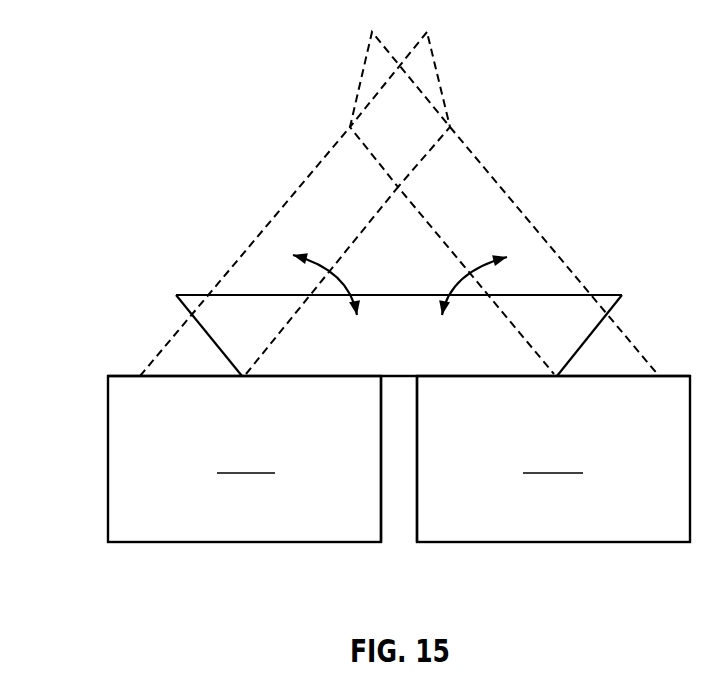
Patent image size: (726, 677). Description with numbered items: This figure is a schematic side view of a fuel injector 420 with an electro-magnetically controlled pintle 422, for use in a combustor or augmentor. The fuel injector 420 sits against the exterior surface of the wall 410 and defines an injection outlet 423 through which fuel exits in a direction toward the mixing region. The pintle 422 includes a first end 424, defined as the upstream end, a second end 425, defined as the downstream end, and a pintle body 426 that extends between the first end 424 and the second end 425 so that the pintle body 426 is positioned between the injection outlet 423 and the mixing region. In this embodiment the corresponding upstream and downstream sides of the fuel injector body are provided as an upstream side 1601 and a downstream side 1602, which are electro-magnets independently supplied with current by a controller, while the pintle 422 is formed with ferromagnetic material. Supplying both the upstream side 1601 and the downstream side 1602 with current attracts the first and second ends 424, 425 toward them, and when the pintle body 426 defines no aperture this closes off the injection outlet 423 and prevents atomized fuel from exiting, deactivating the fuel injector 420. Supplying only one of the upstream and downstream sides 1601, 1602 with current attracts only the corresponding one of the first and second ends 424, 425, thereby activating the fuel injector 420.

The wall 410 is at (125, 375).
The fuel injector 420 is at (351, 459).
The pintle 422 is at (350, 362).
The injection outlet 423 is at (393, 395).
The first end 424 is at (176, 294).
The second end 425 is at (620, 294).
The pintle body 426 is at (400, 293).
The upstream side 1601 is at (244, 459).
The downstream side 1602 is at (553, 459).